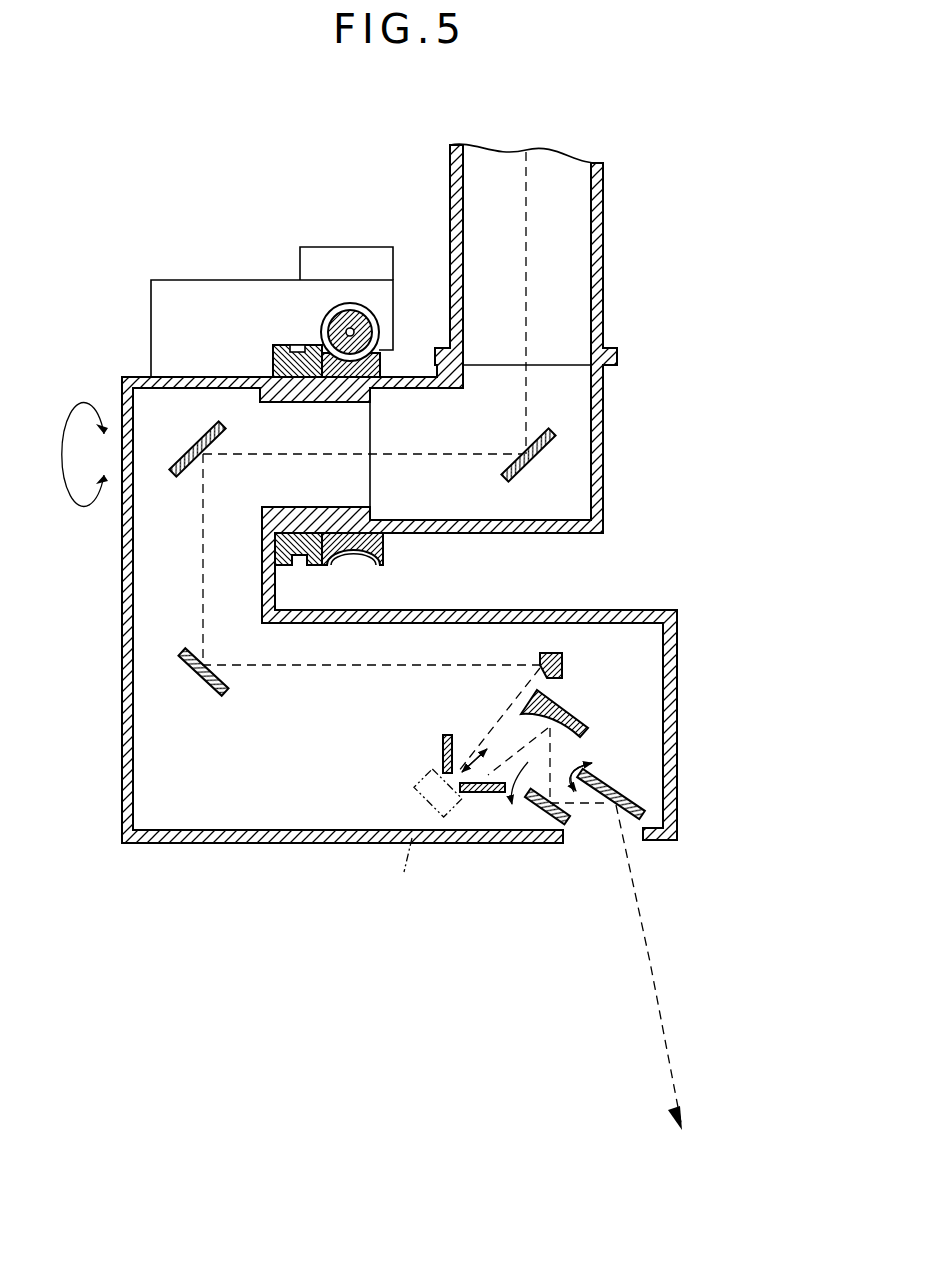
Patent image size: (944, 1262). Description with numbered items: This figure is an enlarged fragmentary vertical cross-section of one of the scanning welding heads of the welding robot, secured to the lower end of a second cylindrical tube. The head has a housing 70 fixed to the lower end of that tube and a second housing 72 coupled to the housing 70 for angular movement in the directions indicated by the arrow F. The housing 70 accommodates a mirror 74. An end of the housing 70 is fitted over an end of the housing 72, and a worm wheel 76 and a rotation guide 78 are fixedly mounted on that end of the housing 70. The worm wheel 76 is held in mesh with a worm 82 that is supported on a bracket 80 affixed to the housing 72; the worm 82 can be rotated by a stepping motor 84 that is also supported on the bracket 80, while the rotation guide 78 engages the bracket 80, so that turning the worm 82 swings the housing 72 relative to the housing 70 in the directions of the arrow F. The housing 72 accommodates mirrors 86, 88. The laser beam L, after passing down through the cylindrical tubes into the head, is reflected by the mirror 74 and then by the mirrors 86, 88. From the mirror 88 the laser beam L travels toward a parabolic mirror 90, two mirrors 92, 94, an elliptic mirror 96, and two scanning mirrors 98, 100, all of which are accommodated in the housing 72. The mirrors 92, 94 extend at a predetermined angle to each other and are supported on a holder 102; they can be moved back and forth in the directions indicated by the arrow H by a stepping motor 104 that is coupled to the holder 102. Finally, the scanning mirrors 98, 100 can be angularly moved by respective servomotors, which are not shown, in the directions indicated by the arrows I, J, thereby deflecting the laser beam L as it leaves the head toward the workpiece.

The housing 70 is at (604, 440).
The housing 72 is at (122, 606).
The mirror 74 is at (550, 450).
The worm wheel 76 is at (384, 548).
The rotation guide 78 is at (283, 345).
The bracket 80 is at (207, 300).
The worm 82 is at (372, 326).
The stepping motor 84 is at (358, 262).
The mirror 86 is at (185, 445).
The mirror 88 is at (212, 690).
The parabolic mirror 90 is at (565, 668).
The mirror 92 is at (443, 752).
The mirror 94 is at (485, 795).
The elliptic mirror 96 is at (565, 708).
The scanning mirror 98 is at (545, 835).
The scanning mirror 100 is at (630, 805).
The holder 102 is at (425, 782).
The stepping motor 104 is at (391, 875).
The laser beam L is at (335, 665).
The arrow F is at (71, 455).
The arrow H is at (489, 745).
The arrow I is at (521, 780).
The arrow J is at (590, 763).